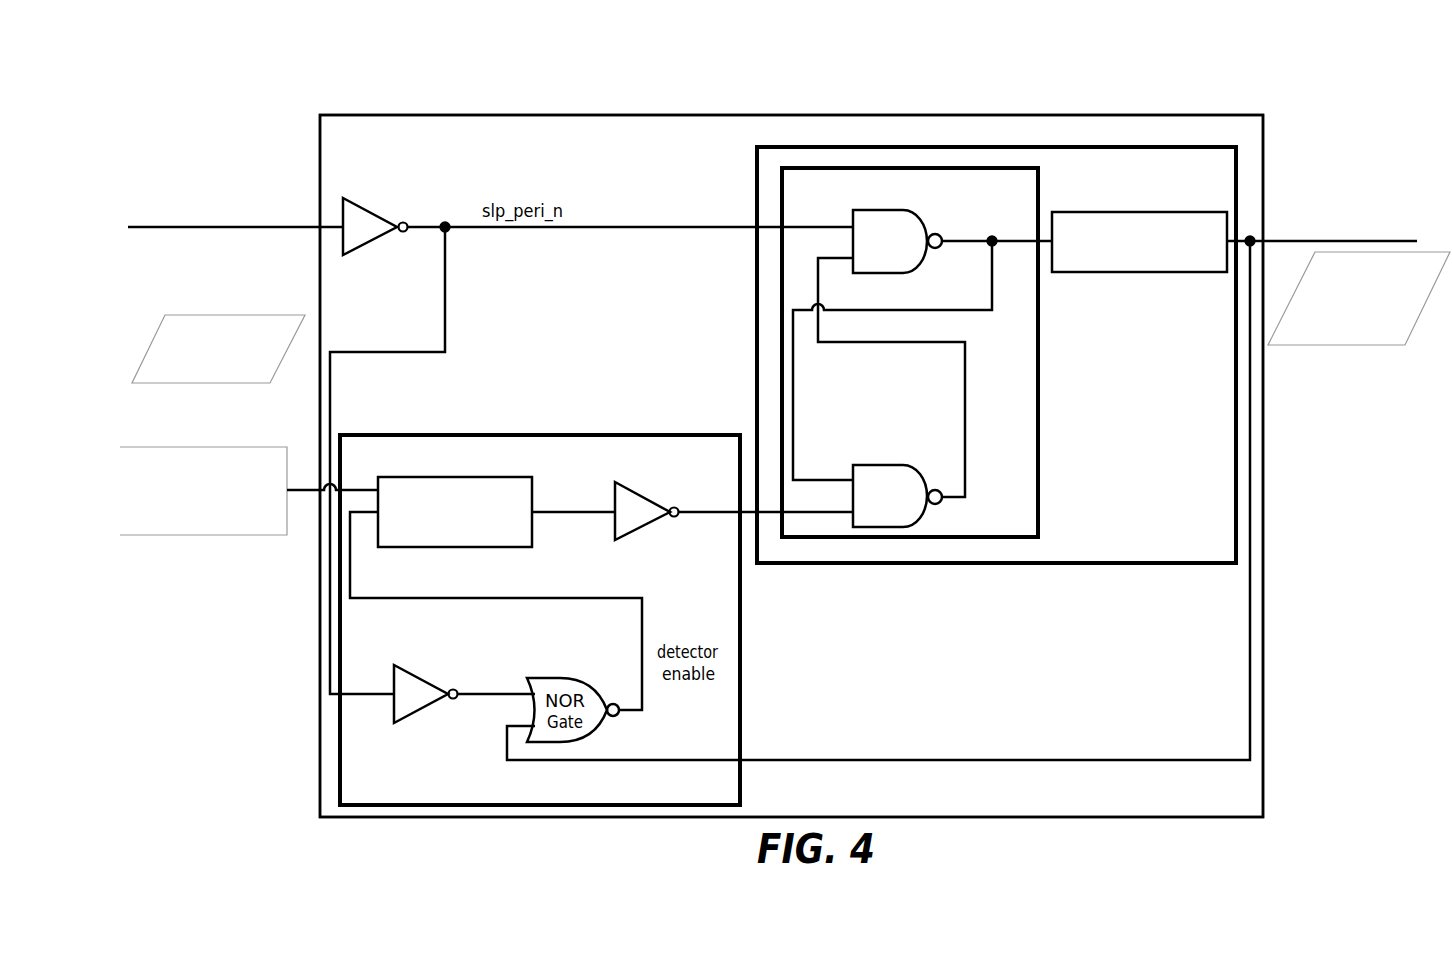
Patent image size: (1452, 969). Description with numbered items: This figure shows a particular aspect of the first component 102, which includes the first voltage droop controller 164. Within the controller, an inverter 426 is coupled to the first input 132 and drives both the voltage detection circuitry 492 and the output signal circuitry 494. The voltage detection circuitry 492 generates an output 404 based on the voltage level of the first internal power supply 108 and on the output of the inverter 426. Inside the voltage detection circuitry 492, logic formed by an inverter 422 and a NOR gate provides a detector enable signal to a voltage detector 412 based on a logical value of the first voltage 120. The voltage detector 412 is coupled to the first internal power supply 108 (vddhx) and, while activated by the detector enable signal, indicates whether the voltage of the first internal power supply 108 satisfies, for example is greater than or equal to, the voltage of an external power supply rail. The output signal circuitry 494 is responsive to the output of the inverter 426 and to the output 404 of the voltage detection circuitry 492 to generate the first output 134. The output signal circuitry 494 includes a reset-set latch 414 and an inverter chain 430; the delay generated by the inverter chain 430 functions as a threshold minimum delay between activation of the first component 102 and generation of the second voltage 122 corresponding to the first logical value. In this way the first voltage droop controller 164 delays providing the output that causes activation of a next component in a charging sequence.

The first component 102 is at (272, 73).
The first voltage droop controller 164 is at (791, 466).
The first input 132 is at (282, 229).
The inverter 426 is at (370, 210).
The first voltage 120 is at (218, 349).
The first internal power supply 108 is at (249, 491).
The voltage detection circuitry 492 is at (740, 622).
The voltage detector 412 is at (455, 512).
The output 404 is at (710, 510).
The inverter 422 is at (405, 718).
The output signal circuitry 494 is at (925, 563).
The reset-set (RS) latch 414 is at (1038, 487).
The inverter chain 430 is at (1139, 242).
The first output 134 is at (1280, 241).
The second voltage 122 is at (1359, 298).